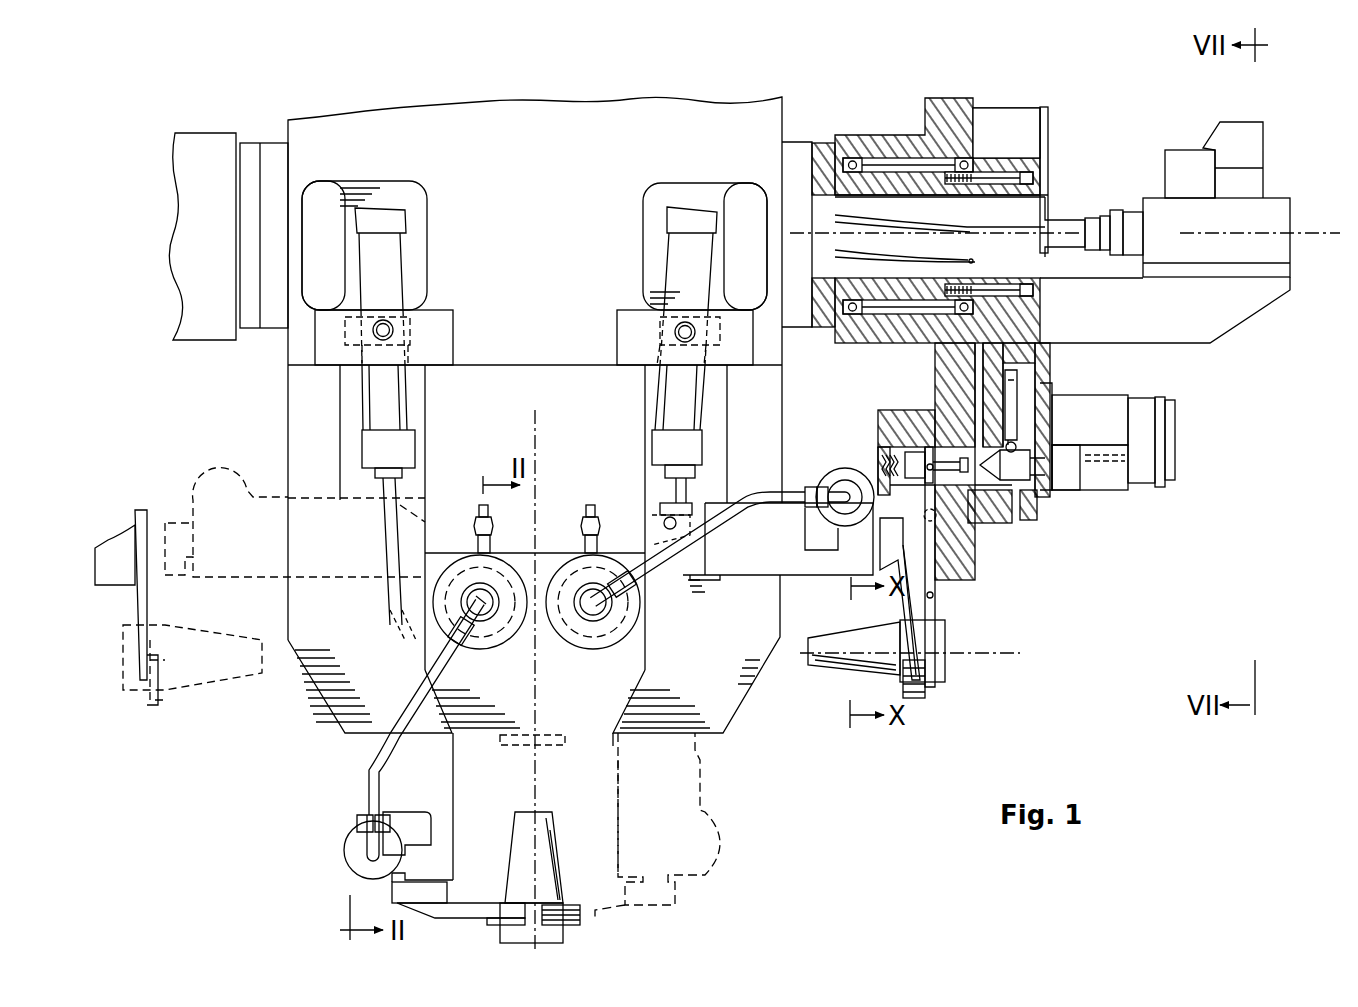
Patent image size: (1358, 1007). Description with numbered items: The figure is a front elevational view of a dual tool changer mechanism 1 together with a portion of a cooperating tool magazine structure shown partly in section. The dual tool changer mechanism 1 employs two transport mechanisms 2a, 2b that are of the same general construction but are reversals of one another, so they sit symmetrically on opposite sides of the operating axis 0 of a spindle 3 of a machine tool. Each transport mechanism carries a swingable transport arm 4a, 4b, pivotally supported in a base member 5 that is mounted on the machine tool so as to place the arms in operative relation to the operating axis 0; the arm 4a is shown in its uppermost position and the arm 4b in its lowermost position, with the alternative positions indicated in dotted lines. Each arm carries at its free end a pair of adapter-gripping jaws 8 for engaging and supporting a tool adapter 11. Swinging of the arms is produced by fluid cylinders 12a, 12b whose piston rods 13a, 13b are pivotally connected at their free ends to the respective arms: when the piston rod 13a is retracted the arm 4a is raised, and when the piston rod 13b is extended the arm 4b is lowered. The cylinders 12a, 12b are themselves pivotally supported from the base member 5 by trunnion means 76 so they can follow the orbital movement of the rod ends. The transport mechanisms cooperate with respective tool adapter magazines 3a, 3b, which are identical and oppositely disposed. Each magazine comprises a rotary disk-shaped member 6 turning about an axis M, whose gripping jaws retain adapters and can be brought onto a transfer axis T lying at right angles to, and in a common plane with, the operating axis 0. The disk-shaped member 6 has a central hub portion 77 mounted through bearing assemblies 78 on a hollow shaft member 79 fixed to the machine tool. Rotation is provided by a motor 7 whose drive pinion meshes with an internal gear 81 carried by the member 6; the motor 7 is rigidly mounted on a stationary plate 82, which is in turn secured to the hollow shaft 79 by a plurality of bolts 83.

The dual tool changer mechanism 1 is at (582, 712).
The transport mechanism 2a is at (742, 580).
The transport mechanism 2b is at (395, 795).
The spindle 3 is at (545, 745).
The tool adapter magazine 3a is at (1052, 512).
The tool adapter magazine 3b is at (100, 588).
The swingable transport arm 4a is at (790, 483).
The swingable transport arm 4b is at (443, 790).
The base member 5 is at (305, 435).
The disk-shaped member 6 is at (975, 568).
The motor 7 is at (1115, 392).
The adapter-gripping jaws 8 is at (474, 908).
The tool adapter 11 is at (553, 842).
The fluid cylinder 12a is at (665, 272).
The fluid cylinder 12b is at (412, 272).
The piston rod 13a is at (662, 486).
The piston rod 13b is at (396, 486).
The trunnion means 76 is at (392, 328).
The central hub portion 77 is at (888, 135).
The bearing assemblies 78 is at (853, 158).
The hollow shaft member 79 is at (824, 143).
The internal gear 81 is at (1000, 500).
The stationary plate 82 is at (1050, 312).
The bolts 83 is at (1036, 176).
The operating axis 0 is at (540, 444).
The magazine rotation axis M is at (1318, 240).
The transfer axis T is at (1018, 655).